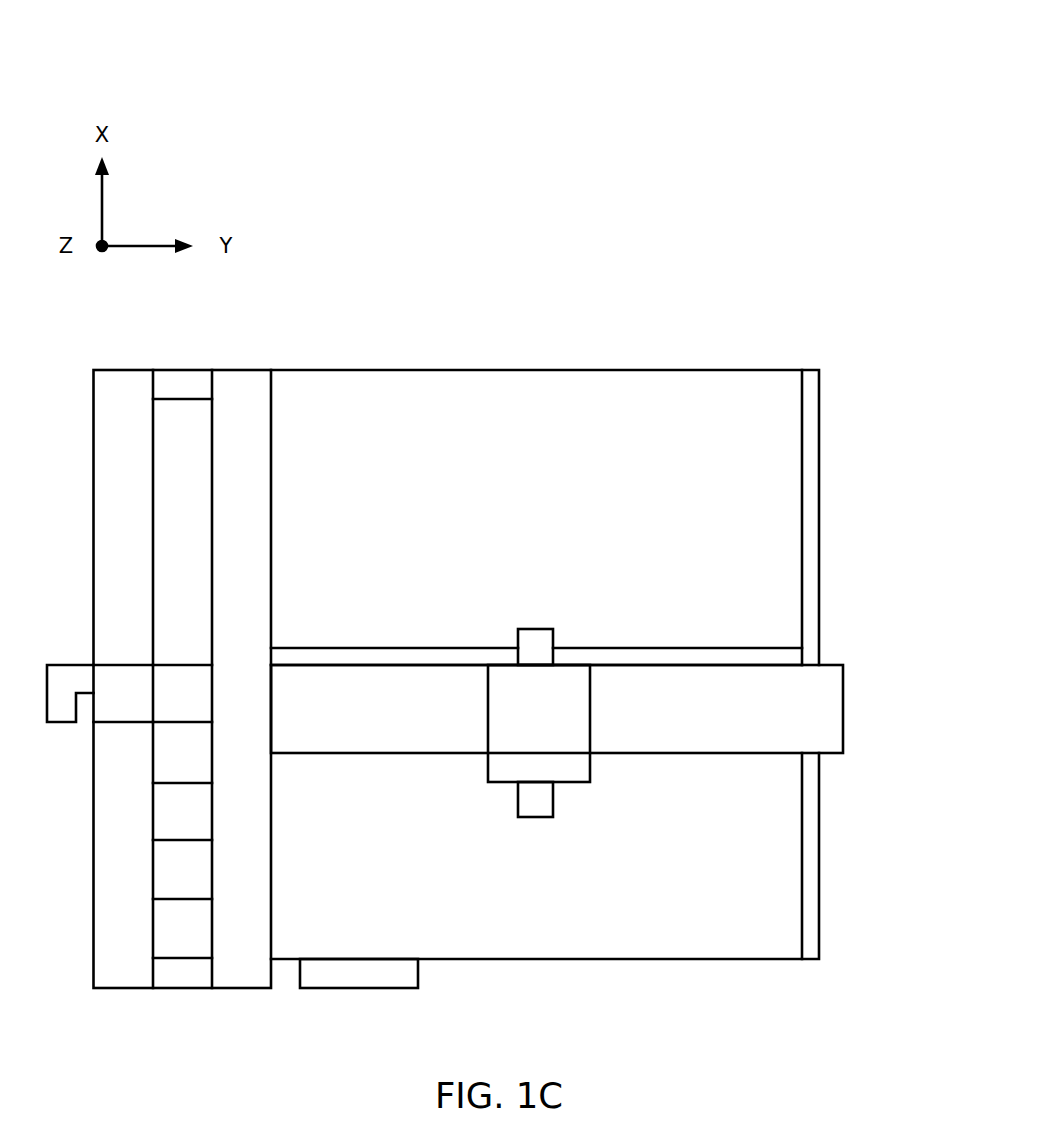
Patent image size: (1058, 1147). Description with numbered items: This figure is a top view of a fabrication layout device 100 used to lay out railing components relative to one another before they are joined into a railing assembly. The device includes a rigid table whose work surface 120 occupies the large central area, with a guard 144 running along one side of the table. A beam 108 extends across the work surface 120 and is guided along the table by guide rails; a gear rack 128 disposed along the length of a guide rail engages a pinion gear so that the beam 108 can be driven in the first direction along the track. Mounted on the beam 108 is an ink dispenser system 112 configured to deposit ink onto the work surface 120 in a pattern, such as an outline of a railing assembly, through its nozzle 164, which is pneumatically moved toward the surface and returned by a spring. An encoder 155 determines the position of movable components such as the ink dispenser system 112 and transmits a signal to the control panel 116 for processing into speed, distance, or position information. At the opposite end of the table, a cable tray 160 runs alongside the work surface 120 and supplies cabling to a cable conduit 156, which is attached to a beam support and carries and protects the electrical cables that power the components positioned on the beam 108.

The fabrication layout device 100 is at (774, 101).
The beam 108 is at (342, 753).
The ink dispenser system 112 is at (602, 799).
The control panel 116 is at (357, 988).
The work surface 120 is at (588, 370).
The gear rack 128 is at (605, 648).
The guards 144 is at (815, 468).
The encoders 155 is at (530, 627).
The cable conduit 156 is at (47, 722).
The cable tray 160 is at (148, 370).
The nozzle 164 is at (540, 817).